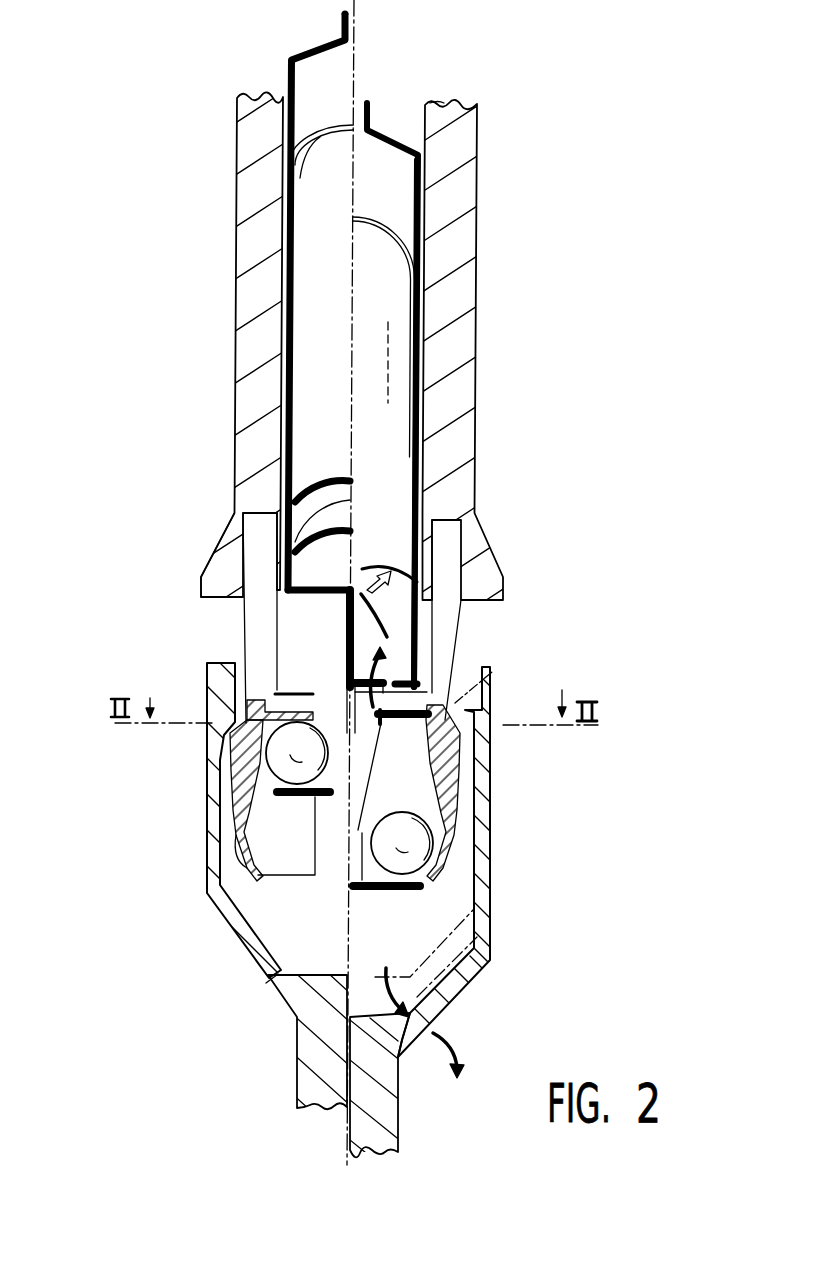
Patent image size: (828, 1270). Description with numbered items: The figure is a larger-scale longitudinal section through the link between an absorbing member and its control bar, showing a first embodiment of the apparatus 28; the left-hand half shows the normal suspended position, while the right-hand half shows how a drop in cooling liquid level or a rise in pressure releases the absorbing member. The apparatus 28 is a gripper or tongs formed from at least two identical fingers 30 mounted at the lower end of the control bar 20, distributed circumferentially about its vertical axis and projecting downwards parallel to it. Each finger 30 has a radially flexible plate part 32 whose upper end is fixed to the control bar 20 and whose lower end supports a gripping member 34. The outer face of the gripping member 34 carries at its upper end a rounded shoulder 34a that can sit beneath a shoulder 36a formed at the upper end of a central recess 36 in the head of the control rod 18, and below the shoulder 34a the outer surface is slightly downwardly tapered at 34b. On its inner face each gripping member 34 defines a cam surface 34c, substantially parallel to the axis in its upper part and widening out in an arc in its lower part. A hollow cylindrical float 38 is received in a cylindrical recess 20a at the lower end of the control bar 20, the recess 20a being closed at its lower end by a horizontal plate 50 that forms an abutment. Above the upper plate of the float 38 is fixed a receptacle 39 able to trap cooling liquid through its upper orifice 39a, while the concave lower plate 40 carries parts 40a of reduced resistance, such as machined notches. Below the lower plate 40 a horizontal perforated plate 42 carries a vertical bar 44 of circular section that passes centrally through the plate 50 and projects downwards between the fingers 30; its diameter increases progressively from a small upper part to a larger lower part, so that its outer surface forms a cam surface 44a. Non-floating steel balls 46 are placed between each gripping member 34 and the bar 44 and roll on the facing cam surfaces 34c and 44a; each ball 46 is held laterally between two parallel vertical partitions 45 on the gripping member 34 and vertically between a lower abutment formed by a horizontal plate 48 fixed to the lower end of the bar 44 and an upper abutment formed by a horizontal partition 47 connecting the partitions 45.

The control rod 18 is at (300, 1088).
The control bar 20 is at (453, 167).
The cylindrical recess 20a is at (427, 118).
The apparatus 28 is at (582, 617).
The fingers 30 is at (234, 636).
The flexible part 32 is at (232, 608).
The gripping member 34 is at (232, 777).
The rounded shoulder 34a is at (456, 722).
The tapered surface 34b is at (252, 812).
The cam surface 34c is at (268, 868).
The central recess 36 is at (462, 886).
The shoulder 36a is at (452, 795).
The float 38 is at (392, 303).
The receptacle 39 is at (315, 88).
The upper orifice 39a is at (343, 24).
The lower plate 40 is at (317, 490).
The reduced resistance parts 40a is at (327, 534).
The perforated plate 42 is at (340, 585).
The vertical bar 44 is at (347, 630).
The cam surface 44a is at (246, 700).
The vertical partitions 45 is at (272, 870).
The balls 46 is at (266, 752).
The horizontal partition 47 is at (396, 724).
The horizontal plate 48 is at (400, 892).
The horizontal plate 50 is at (420, 693).